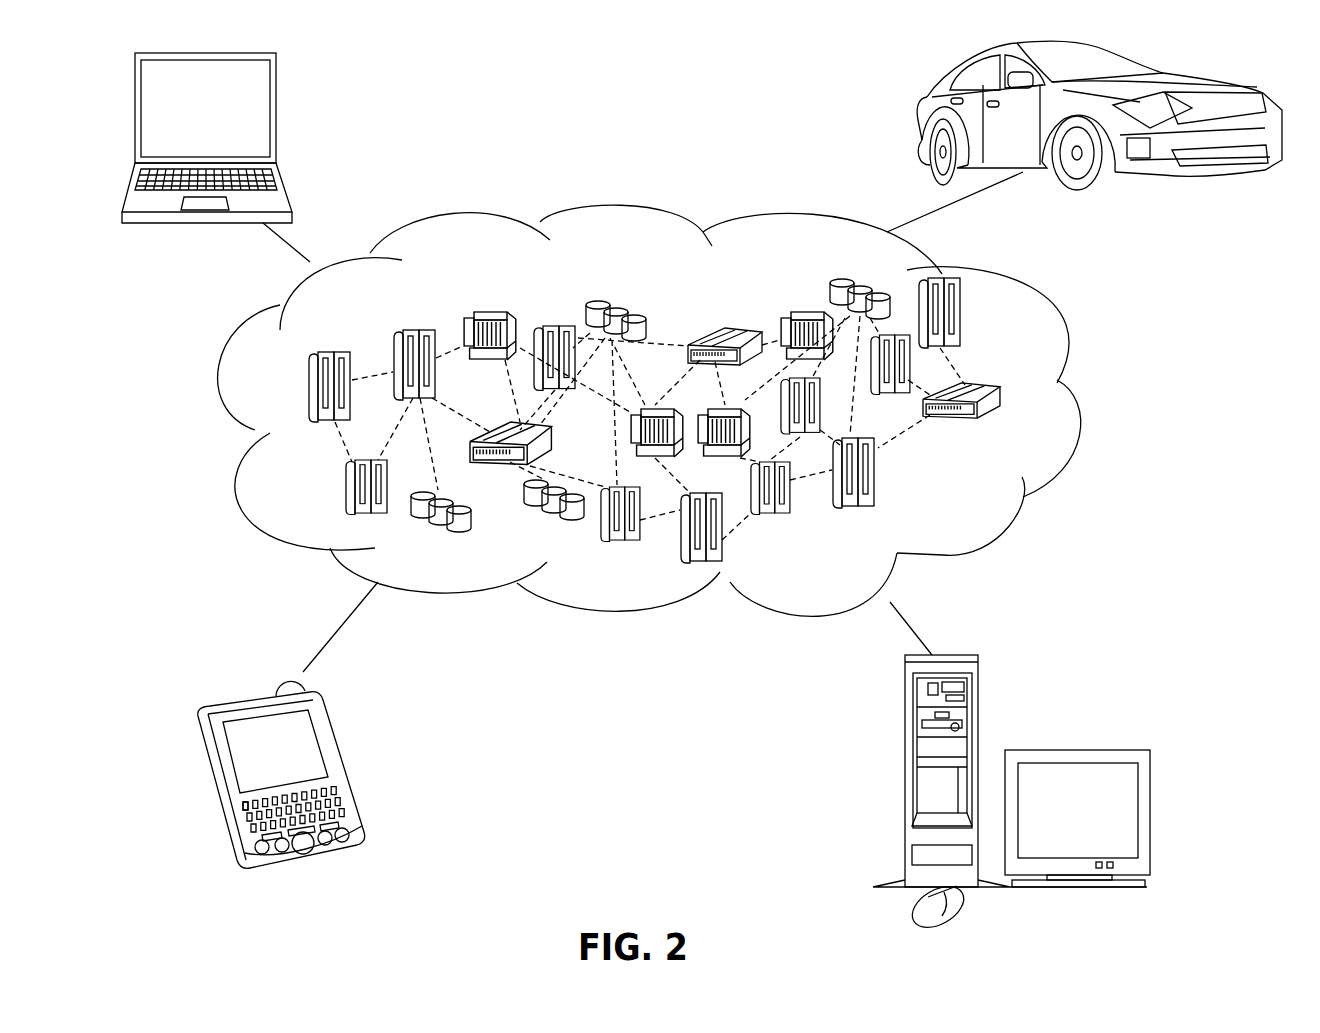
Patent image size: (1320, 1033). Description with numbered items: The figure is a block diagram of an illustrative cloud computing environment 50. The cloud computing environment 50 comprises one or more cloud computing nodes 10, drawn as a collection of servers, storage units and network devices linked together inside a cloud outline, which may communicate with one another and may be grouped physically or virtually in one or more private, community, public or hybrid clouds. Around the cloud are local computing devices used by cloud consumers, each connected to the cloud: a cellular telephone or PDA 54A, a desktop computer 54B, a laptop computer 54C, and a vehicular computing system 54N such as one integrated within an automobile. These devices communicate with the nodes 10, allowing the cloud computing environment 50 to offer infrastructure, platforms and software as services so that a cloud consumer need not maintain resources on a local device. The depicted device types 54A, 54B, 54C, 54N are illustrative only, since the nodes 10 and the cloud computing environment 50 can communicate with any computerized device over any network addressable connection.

The cloud computing node 10 is at (986, 509).
The cloud computing environment 50 is at (1073, 400).
The cellular telephone or PDA 54A is at (330, 731).
The desktop computer 54B is at (905, 716).
The laptop computer 54C is at (277, 92).
The vehicular computing system 54N is at (918, 108).